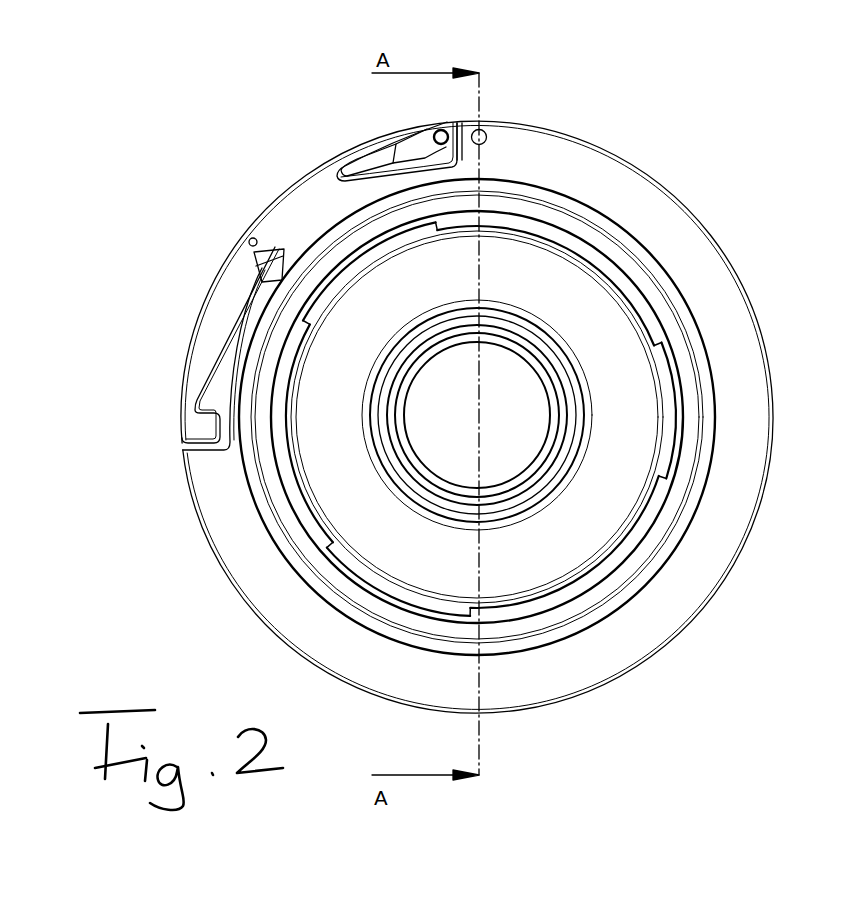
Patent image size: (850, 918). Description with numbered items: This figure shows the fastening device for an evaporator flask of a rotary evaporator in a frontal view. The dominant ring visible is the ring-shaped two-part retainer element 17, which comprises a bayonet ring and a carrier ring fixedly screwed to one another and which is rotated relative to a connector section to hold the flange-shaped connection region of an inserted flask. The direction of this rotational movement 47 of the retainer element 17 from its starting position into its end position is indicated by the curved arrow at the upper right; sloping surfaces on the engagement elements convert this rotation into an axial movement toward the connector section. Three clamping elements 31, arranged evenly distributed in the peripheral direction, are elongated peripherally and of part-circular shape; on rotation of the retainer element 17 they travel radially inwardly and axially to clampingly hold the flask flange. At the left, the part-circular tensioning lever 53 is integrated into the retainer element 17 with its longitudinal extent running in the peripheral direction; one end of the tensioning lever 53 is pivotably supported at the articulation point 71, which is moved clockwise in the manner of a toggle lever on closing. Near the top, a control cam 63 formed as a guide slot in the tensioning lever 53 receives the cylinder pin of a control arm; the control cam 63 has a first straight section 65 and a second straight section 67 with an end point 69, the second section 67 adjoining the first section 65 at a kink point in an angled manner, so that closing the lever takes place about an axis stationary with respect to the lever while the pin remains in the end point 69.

The retainer element 17 is at (745, 298).
The clamping elements 31 is at (556, 233).
The rotational movement 47 is at (683, 110).
The tensioning lever 53 is at (227, 272).
The control cam 63 is at (328, 177).
The first straight section 65 is at (358, 160).
The second straight section 67 is at (425, 138).
The end point 69 is at (464, 98).
The articulation point 71 is at (481, 137).